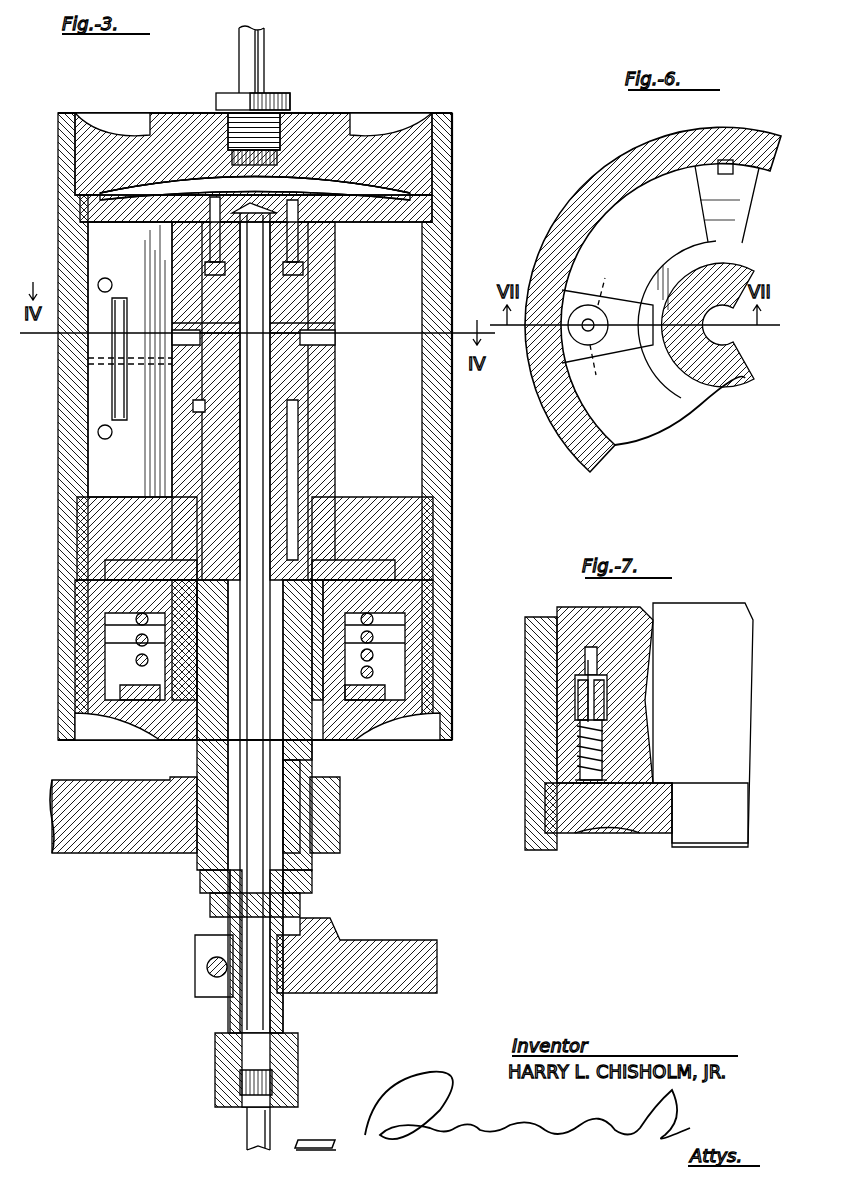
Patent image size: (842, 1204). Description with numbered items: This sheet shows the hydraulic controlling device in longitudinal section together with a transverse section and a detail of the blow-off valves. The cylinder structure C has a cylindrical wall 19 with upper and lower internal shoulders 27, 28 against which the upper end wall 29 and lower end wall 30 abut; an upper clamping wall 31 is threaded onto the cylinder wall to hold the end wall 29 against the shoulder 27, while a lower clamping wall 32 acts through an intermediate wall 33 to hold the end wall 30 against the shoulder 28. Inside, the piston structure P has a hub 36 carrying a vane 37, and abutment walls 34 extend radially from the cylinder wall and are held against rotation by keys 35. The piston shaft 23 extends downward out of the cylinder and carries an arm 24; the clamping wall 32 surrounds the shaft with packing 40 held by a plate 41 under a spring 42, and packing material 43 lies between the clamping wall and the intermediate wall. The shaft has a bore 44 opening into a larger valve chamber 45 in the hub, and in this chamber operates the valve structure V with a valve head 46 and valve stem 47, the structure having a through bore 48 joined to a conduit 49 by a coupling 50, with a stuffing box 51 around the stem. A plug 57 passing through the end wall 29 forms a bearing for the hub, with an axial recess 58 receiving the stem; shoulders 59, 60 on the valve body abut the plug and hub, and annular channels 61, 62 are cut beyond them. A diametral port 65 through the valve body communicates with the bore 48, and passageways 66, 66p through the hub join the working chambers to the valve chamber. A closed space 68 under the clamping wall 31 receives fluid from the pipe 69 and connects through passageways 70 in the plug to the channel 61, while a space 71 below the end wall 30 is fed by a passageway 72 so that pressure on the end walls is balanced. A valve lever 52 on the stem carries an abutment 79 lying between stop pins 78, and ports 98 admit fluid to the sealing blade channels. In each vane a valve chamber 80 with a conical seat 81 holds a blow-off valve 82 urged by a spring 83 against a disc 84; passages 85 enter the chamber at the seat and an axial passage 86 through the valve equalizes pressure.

In FIG. 3, the cylindrical wall 19 is at (440, 486).
In FIG. 6, the cylindrical wall 19 is at (606, 180).
In FIG. 7, the cylindrical wall 19 is at (545, 690).
In FIG. 3, the cylinder structure C is at (462, 437).
In FIG. 3, the upper internal shoulder 27 is at (440, 237).
In FIG. 3, the upper end wall 29 is at (425, 210).
In FIG. 3, the upper clamping wall 31 is at (360, 150).
In FIG. 3, the closed space 68 is at (365, 182).
In FIG. 3, the hydraulic fluid flow pipe 69 is at (252, 63).
In FIG. 3, the plug 57 is at (270, 200).
In FIG. 3, the passageways 70 is at (292, 205).
In FIG. 3, the axial recess 58 is at (250, 207).
In FIG. 3, the piston hub 36 is at (322, 420).
In FIG. 6, the piston hub 36 is at (720, 382).
In FIG. 7, the piston hub 36 is at (660, 612).
In FIG. 3, the piston shaft 23 is at (212, 752).
In FIG. 7, the piston shaft 23 is at (722, 833).
In FIG. 3, the valve port 65 is at (300, 331).
In FIG. 3, the passageway 66 is at (192, 338).
In FIG. 3, the passageway 66p is at (330, 323).
In FIG. 3, the valve chamber 45 is at (328, 302).
In FIG. 3, the valve head 46 is at (300, 362).
In FIG. 3, the annular channel 61 is at (305, 266).
In FIG. 3, the upper shoulder 59 is at (300, 290).
In FIG. 3, the lower shoulder 60 is at (300, 402).
In FIG. 3, the annular channel 62 is at (205, 406).
In FIG. 3, the valve structure V is at (205, 383).
In FIG. 3, the piston structure P is at (327, 452).
In FIG. 3, the valve stem 47 is at (282, 478).
In FIG. 3, the passageway 72 is at (282, 493).
In FIG. 3, the space 71 is at (368, 556).
In FIG. 3, the ports 98 is at (108, 280).
In FIG. 3, the vane 37 is at (130, 452).
In FIG. 6, the vane 37 is at (672, 318).
In FIG. 7, the vane 37 is at (618, 617).
In FIG. 3, the lower end wall 30 is at (425, 540).
In FIG. 7, the lower end wall 30 is at (605, 860).
In FIG. 3, the lower internal shoulder 28 is at (430, 496).
In FIG. 3, the intermediate wall 33 is at (412, 590).
In FIG. 3, the spring 42 is at (398, 624).
In FIG. 3, the plate 41 is at (270, 645).
In FIG. 3, the packing material 43 is at (410, 648).
In FIG. 3, the lower clamping wall 32 is at (425, 690).
In FIG. 3, the packing 40 is at (320, 705).
In FIG. 3, the bore 44 is at (312, 752).
In FIG. 3, the arm 24 is at (88, 835).
In FIG. 3, the stuffing box 51 is at (300, 850).
In FIG. 3, the bore 48 is at (258, 877).
In FIG. 3, the stop pin 78 is at (312, 898).
In FIG. 3, the abutment 79 is at (320, 930).
In FIG. 3, the valve lever 52 is at (405, 953).
In FIG. 3, the coupling 50 is at (290, 1062).
In FIG. 3, the conduit 49 is at (262, 1122).
In FIG. 6, the abutment wall 34 is at (706, 207).
In FIG. 6, the key 35 is at (728, 160).
In FIG. 6, the disc 84 is at (578, 310).
In FIG. 7, the disc 84 is at (580, 775).
In FIG. 6, the passage 85 is at (615, 322).
In FIG. 7, the axial passage 86 is at (590, 645).
In FIG. 7, the conical seat 81 is at (600, 695).
In FIG. 7, the blow-off valve 82 is at (603, 705).
In FIG. 7, the spring 83 is at (603, 757).
In FIG. 7, the valve chamber 80 is at (580, 742).